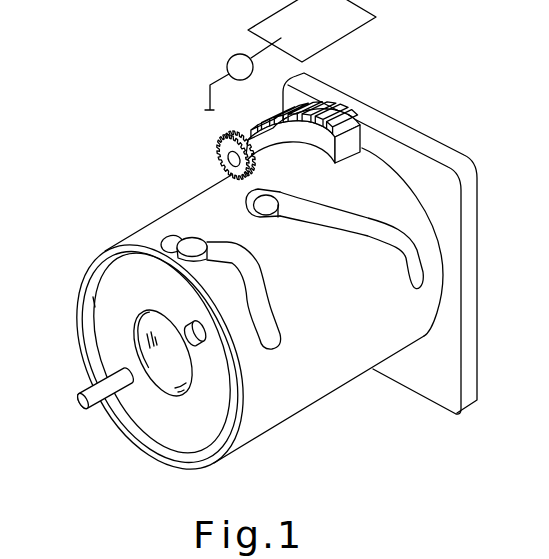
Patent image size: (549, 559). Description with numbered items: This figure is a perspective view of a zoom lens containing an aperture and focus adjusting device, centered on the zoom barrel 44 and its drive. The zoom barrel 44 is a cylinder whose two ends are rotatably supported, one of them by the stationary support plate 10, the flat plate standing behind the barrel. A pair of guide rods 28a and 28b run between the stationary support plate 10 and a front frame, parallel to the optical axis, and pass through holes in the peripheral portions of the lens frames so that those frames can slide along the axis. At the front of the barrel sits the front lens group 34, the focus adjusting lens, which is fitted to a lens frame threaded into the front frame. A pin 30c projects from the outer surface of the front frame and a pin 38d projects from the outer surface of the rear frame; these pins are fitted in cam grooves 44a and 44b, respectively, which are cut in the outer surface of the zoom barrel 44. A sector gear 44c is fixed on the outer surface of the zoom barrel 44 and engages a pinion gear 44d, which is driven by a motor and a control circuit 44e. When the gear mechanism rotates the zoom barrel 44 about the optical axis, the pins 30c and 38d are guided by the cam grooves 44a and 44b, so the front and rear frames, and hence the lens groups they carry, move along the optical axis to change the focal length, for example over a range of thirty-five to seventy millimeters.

The stationary support plate 10 is at (479, 200).
The guide rod 28a is at (93, 411).
The guide rod 28b is at (204, 344).
The pin 30c is at (162, 238).
The front lens group (focus adjusting lens) 34 is at (168, 374).
The pin 38d is at (246, 200).
The zoom barrel 44 is at (308, 407).
The cam groove 44a is at (267, 295).
The cam groove 44b is at (338, 228).
The sector gear 44c is at (330, 133).
The pinion gear 44d is at (222, 142).
The control circuit 44e is at (337, 34).